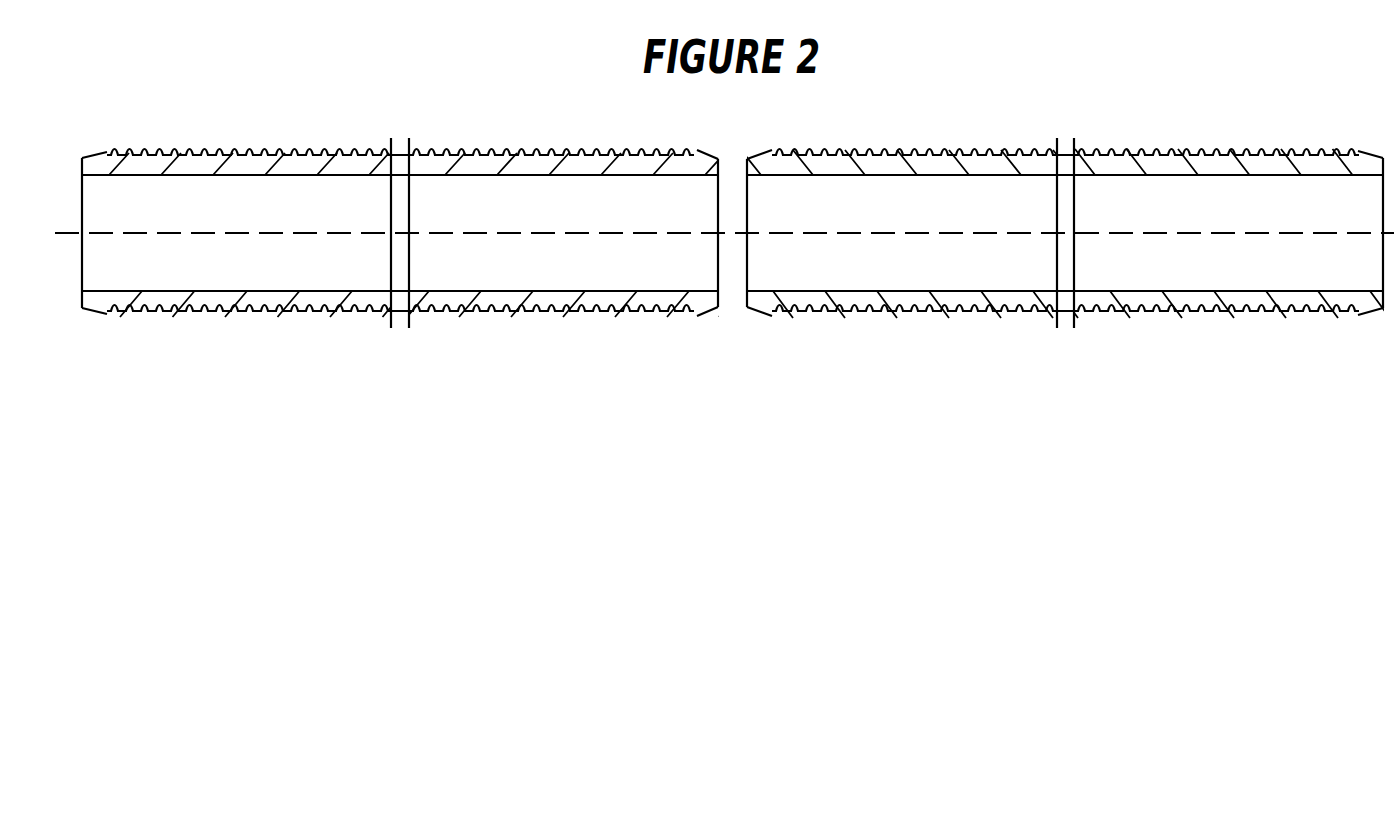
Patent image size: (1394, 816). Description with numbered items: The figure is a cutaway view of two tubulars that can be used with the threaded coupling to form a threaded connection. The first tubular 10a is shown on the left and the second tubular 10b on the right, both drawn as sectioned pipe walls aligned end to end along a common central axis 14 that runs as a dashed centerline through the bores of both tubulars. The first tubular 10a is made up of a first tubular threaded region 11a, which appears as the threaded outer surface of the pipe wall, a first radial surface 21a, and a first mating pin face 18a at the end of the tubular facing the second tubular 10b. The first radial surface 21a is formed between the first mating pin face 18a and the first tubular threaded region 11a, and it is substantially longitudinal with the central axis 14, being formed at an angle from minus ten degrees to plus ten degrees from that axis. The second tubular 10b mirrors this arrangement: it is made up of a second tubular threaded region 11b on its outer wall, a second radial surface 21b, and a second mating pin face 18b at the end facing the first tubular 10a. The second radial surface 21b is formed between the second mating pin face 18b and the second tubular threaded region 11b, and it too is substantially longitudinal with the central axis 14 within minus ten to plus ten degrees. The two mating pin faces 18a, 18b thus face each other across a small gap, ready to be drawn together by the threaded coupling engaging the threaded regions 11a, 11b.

The first tubular 10a is at (411, 270).
The second tubular 10b is at (1060, 278).
The first tubular threaded region 11a is at (665, 142).
The second tubular threaded region 11b is at (802, 327).
The central axis 14 is at (541, 233).
The first mating pin face 18a is at (725, 148).
The second mating pin face 18b is at (746, 303).
The first radial surface 21a is at (713, 309).
The second radial surface 21b is at (754, 157).